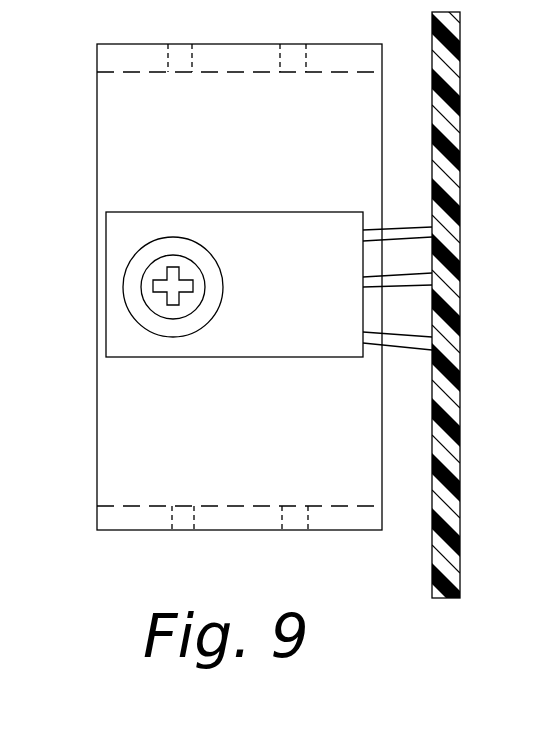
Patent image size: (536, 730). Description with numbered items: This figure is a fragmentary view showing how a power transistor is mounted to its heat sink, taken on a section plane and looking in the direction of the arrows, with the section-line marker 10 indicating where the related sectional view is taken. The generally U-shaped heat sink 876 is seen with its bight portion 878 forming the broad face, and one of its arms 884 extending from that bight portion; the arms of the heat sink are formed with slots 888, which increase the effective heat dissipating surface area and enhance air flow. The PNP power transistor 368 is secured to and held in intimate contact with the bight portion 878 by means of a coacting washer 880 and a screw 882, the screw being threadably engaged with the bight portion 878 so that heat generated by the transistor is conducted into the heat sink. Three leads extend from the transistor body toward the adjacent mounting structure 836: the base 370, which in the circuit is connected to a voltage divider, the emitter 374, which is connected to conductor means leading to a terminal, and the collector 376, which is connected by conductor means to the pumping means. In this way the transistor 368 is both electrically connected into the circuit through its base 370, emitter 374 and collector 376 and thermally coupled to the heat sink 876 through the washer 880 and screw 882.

The section line 10- 10 is at (69, 597).
The PNP power transistor 368 is at (303, 360).
The base 370 is at (420, 224).
The emitter 374 is at (420, 341).
The collector 376 is at (420, 279).
The wall 836 is at (357, 505).
The heat sink 876 is at (96, 393).
The bight portion 878 is at (205, 108).
The washer 880 is at (218, 273).
The screw 882 is at (178, 253).
The arm 884 is at (125, 73).
The slots 888 is at (172, 46).